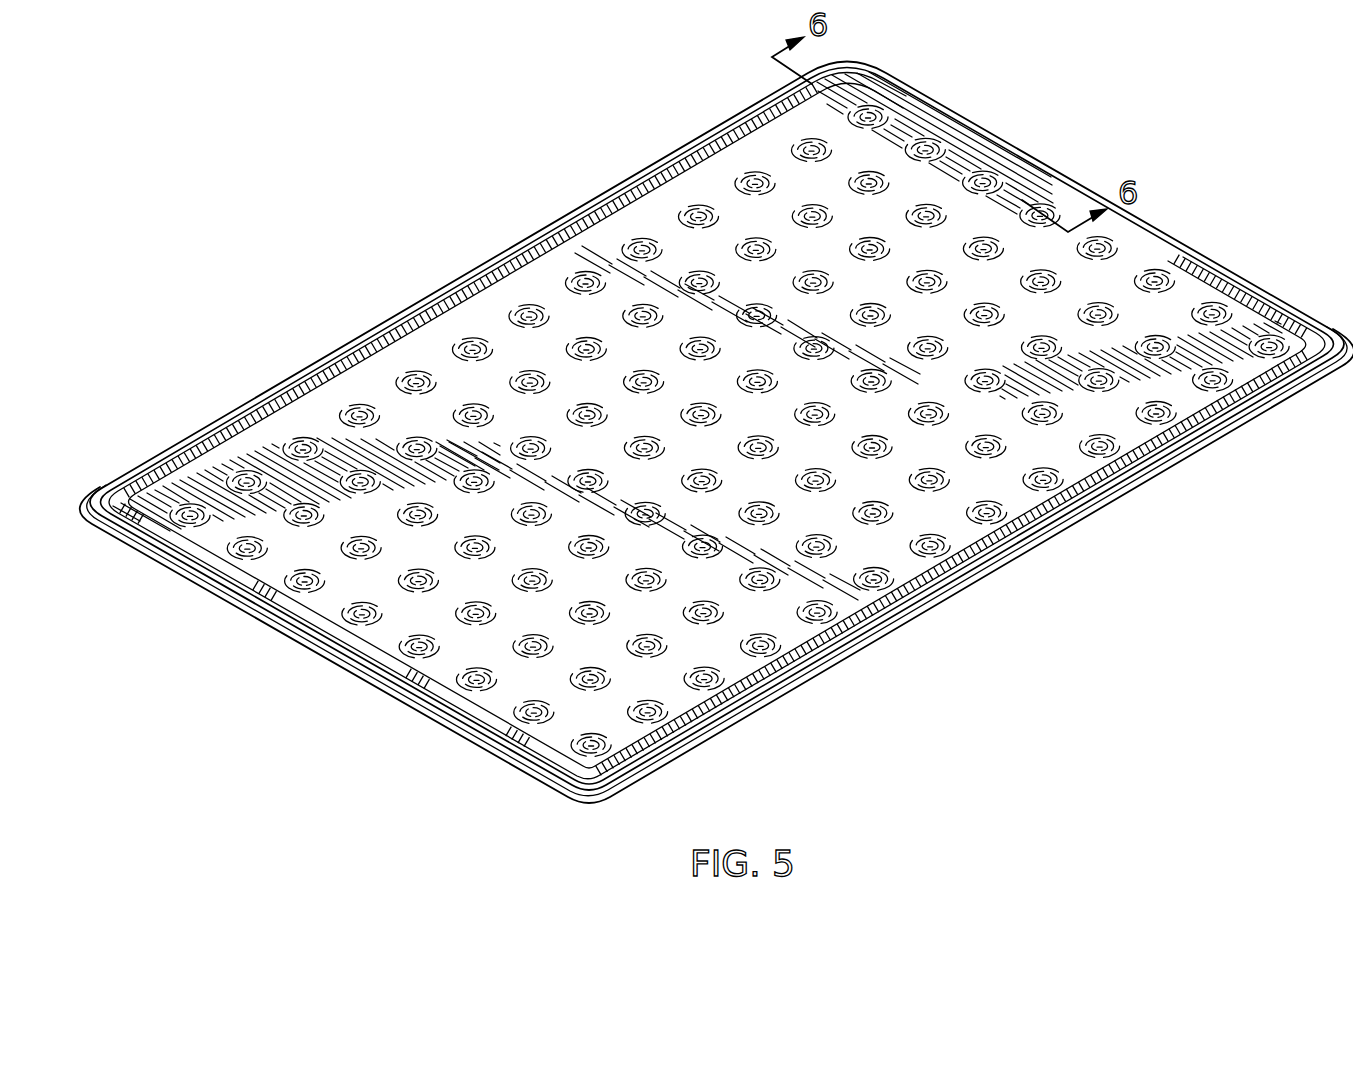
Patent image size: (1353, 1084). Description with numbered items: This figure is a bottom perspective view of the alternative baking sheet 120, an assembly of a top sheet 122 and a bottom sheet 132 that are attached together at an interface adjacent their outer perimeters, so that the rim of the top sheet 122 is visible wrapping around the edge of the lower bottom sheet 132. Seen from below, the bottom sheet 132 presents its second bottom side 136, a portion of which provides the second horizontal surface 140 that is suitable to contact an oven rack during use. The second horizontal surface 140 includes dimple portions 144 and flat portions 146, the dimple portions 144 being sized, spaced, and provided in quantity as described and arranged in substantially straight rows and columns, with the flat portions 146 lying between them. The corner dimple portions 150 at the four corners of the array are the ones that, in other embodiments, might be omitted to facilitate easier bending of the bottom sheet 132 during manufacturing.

The baking sheet 120 is at (341, 212).
The top sheet 122 is at (220, 617).
The bottom sheet 132 is at (315, 636).
The second bottom side 136 is at (405, 420).
The second horizontal surface 140 is at (779, 425).
The dimple portions 144 is at (642, 249).
The flat portions 146 is at (551, 290).
The corner dimple portions 150 is at (872, 113).